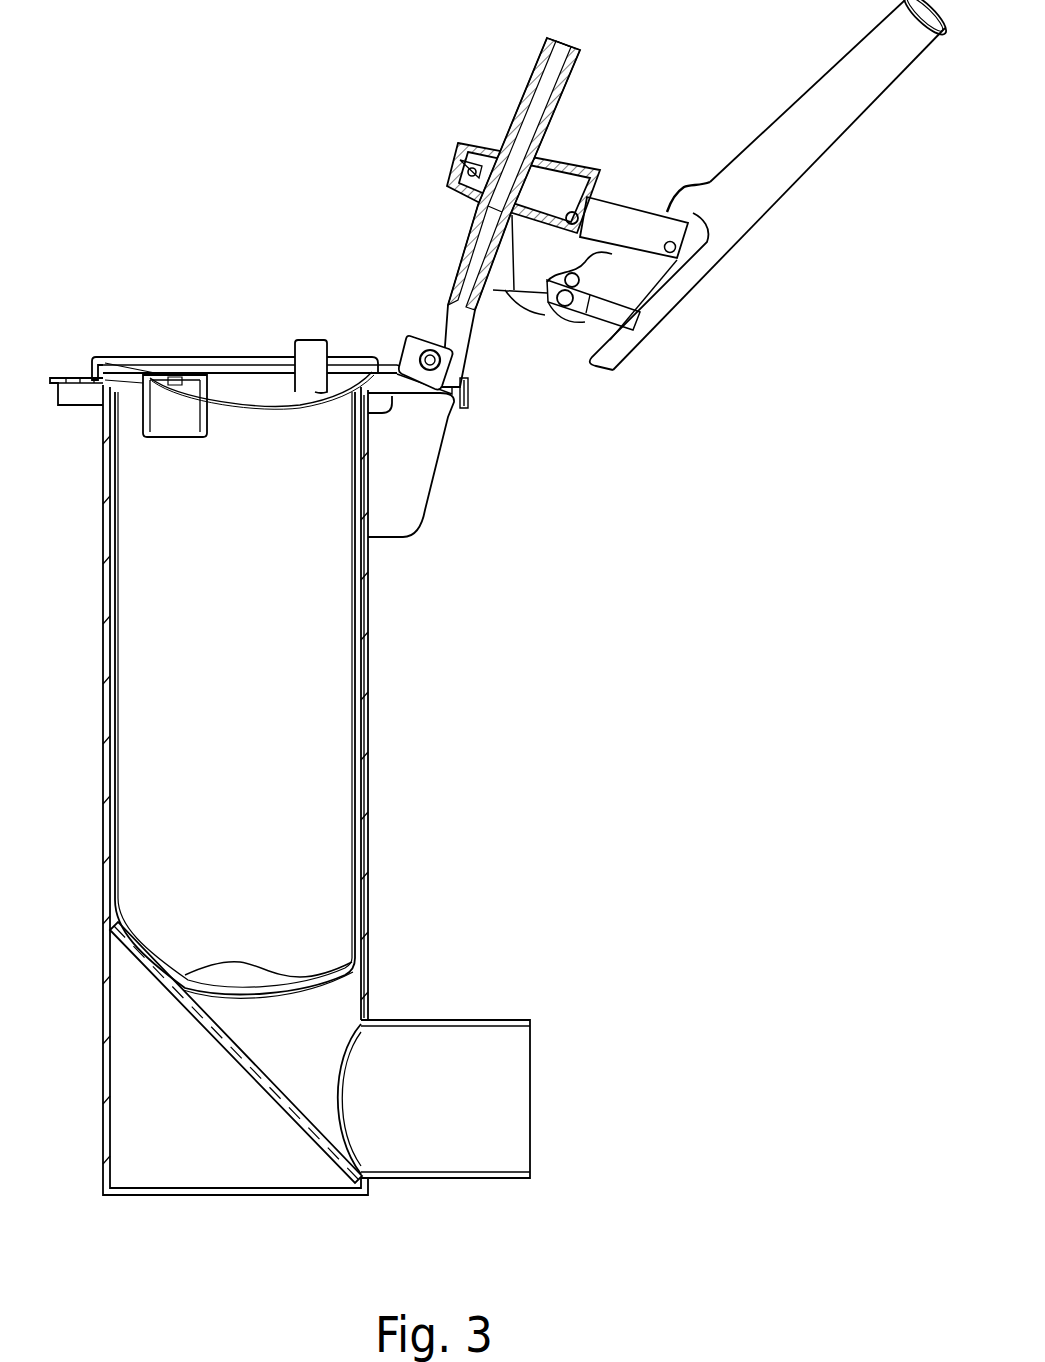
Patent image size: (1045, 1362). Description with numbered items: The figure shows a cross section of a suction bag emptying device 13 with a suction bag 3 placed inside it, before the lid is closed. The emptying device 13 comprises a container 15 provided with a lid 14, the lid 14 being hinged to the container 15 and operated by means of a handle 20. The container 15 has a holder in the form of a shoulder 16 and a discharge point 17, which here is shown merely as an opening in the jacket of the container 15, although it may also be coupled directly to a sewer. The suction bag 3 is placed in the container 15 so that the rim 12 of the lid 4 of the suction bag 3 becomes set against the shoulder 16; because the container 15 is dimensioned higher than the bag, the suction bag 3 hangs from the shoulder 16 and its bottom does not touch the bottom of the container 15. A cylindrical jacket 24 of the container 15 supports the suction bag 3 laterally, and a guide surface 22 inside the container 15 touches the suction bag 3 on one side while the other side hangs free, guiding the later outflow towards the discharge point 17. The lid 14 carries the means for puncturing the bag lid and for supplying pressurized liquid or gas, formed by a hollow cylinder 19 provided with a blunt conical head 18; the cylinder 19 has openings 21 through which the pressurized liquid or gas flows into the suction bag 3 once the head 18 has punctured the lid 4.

The suction bag 3 is at (342, 862).
The lid of the suction bag 4 is at (218, 355).
The rim 12 is at (95, 358).
The emptying device 13 is at (370, 731).
The lid 14 is at (568, 82).
The container 15 is at (368, 607).
The shoulder 16 is at (78, 378).
The discharge point 17 is at (525, 1117).
The blunt conical head 18 is at (468, 171).
The hollow cylinder 19 is at (537, 182).
The handle 20 is at (882, 42).
The openings 21 is at (468, 138).
The guide surface 22 is at (250, 1055).
The cylindrical jacket 24 is at (368, 668).